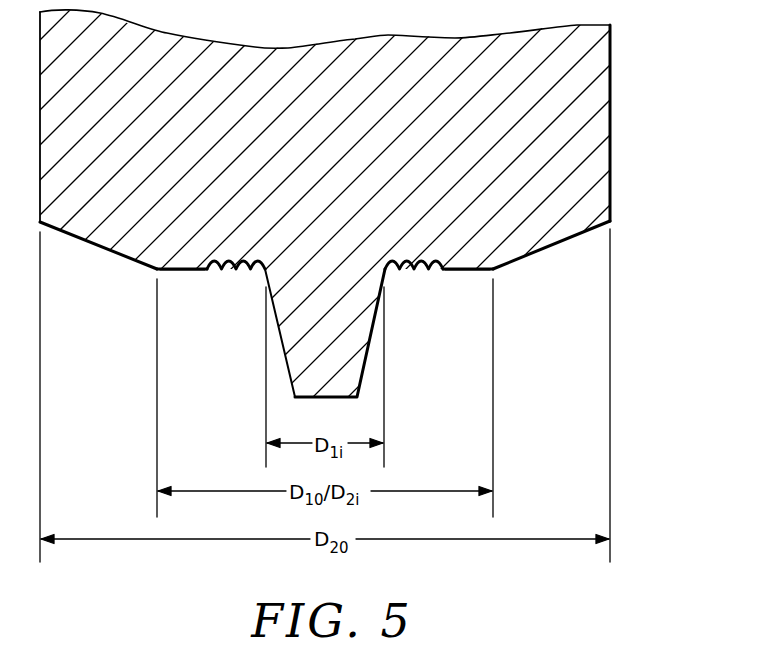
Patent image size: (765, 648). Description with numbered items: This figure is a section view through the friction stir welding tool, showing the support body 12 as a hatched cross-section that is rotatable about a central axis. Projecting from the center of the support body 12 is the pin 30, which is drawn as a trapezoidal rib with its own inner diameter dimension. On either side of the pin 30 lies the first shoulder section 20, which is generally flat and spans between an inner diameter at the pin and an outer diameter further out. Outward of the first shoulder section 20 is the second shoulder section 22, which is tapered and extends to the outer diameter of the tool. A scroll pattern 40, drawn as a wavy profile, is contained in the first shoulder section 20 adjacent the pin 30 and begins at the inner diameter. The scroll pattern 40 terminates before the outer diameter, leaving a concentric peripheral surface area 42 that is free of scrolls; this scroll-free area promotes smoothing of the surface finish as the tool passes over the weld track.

The support body 12 is at (592, 124).
The first shoulder section 20 is at (170, 266).
The second shoulder section 22 is at (100, 247).
The pin 30 is at (362, 328).
The scroll pattern 40 is at (230, 259).
The concentric peripheral surface area 42 is at (195, 272).